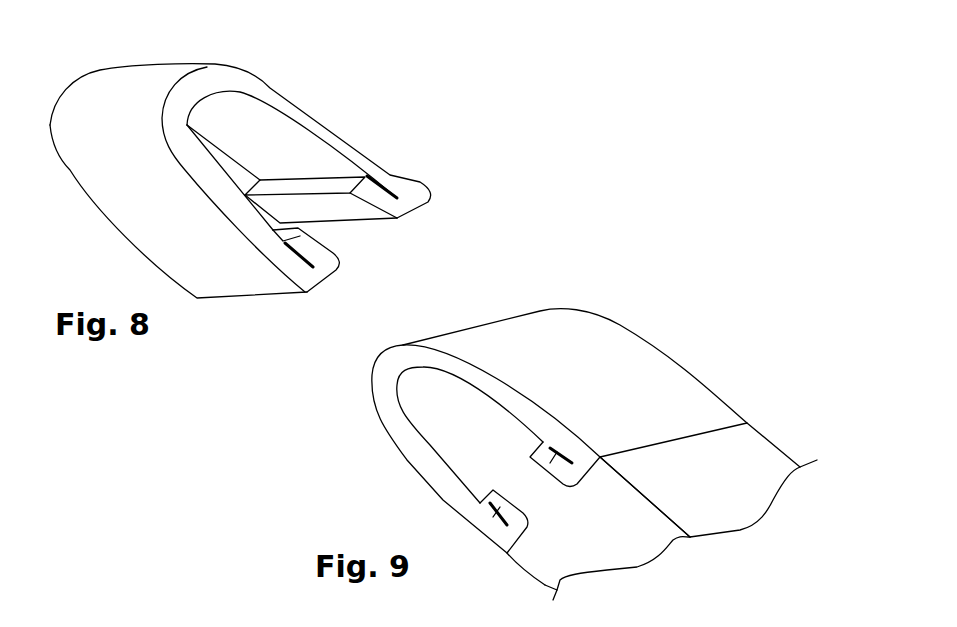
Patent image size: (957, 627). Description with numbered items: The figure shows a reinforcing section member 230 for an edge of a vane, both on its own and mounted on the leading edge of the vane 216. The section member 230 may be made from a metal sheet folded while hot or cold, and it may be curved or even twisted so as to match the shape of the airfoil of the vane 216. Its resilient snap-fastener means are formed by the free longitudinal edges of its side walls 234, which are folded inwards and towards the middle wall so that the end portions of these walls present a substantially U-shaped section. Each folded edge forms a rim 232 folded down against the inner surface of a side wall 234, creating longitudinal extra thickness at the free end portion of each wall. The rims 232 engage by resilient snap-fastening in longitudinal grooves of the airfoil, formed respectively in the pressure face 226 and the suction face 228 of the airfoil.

In FIG. 9, the vane 216 is at (640, 566).
In FIG. 9, the pressure face 226 is at (543, 582).
In FIG. 9, the suction face 228 is at (740, 457).
In FIG. 8, the section member 230 is at (195, 46).
In FIG. 9, the section member 230 is at (512, 320).
In FIG. 9, the rim 232 is at (553, 455).
In FIG. 8, the side wall 234 is at (330, 123).
In FIG. 9, the side wall 234 is at (578, 348).